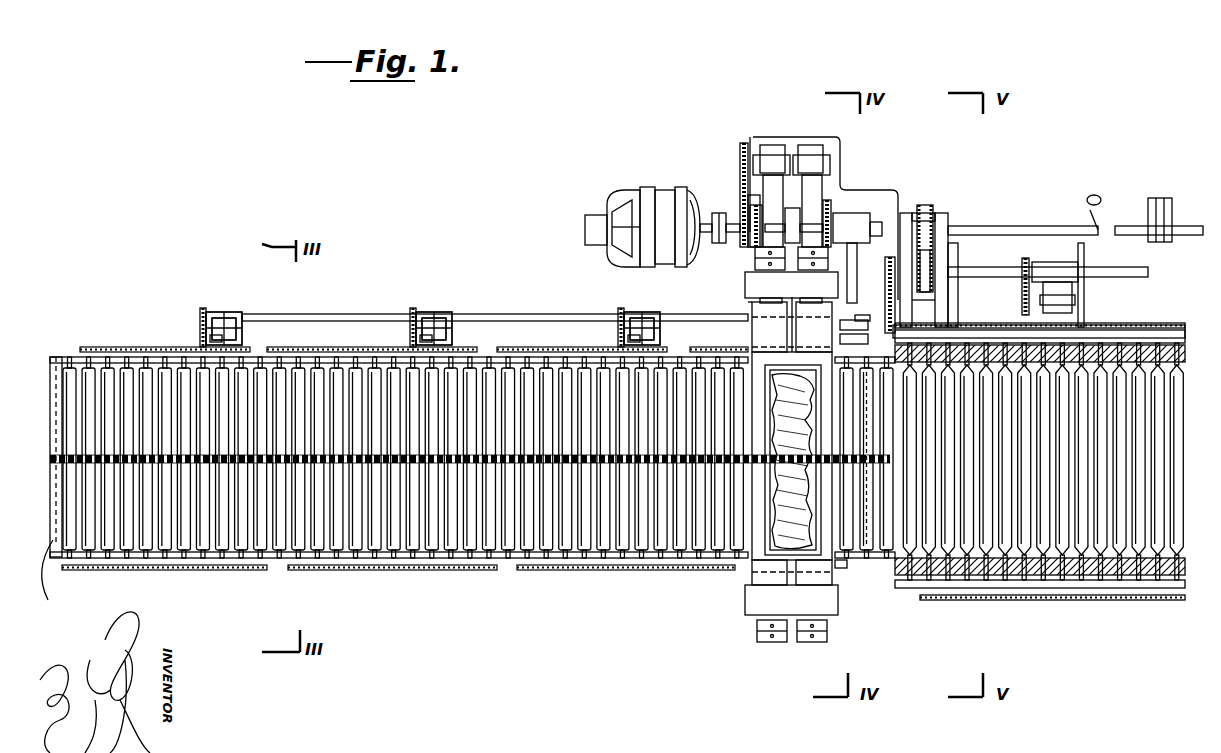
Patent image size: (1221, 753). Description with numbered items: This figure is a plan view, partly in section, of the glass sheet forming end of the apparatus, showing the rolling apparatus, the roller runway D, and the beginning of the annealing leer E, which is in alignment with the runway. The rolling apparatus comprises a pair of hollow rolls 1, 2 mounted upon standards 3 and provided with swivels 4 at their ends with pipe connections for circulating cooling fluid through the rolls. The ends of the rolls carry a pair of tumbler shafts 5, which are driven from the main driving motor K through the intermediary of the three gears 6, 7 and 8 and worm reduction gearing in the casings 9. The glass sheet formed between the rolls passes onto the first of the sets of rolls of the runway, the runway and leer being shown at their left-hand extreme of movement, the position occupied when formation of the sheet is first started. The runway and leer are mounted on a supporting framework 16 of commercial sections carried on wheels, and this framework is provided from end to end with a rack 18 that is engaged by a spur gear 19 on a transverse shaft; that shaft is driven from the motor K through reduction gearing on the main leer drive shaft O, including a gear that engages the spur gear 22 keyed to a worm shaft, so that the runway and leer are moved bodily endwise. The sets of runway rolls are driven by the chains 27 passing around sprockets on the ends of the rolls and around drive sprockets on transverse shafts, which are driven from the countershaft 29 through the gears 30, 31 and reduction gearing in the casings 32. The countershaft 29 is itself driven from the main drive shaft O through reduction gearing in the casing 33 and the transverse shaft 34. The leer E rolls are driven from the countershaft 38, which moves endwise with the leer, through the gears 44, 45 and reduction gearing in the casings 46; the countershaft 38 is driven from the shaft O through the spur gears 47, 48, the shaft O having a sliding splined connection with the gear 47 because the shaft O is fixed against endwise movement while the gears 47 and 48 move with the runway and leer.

The hollow roll 1 is at (752, 577).
The hollow roll 2 is at (835, 578).
The standard 3 is at (748, 283).
The swivel 4 is at (760, 640).
The tumbler shaft 5 is at (770, 235).
The gear 6 is at (757, 218).
The gear 7 is at (745, 192).
The gear 8 is at (740, 150).
The casing 9 is at (770, 160).
The supporting framework 16 is at (58, 578).
The rack 18 is at (57, 357).
The spur gear 19 is at (868, 578).
The spur gear 22 is at (838, 208).
The chain 27 is at (98, 347).
The countershaft 29 is at (304, 314).
The gear 30 is at (200, 310).
The gear 31 is at (200, 332).
The casing 32 is at (222, 330).
The casing 33 is at (888, 188).
The transverse shaft 34 is at (865, 405).
The countershaft 38 is at (1112, 276).
The gear 44 is at (1022, 303).
The gear 45 is at (1022, 266).
The casing 46 is at (1052, 300).
The spur gear 47 is at (927, 210).
The spur gear 48 is at (933, 262).
The roller runway D is at (133, 325).
The annealing leer E is at (1085, 560).
The main driving motor K is at (662, 227).
The main leer drive shaft O is at (1075, 216).